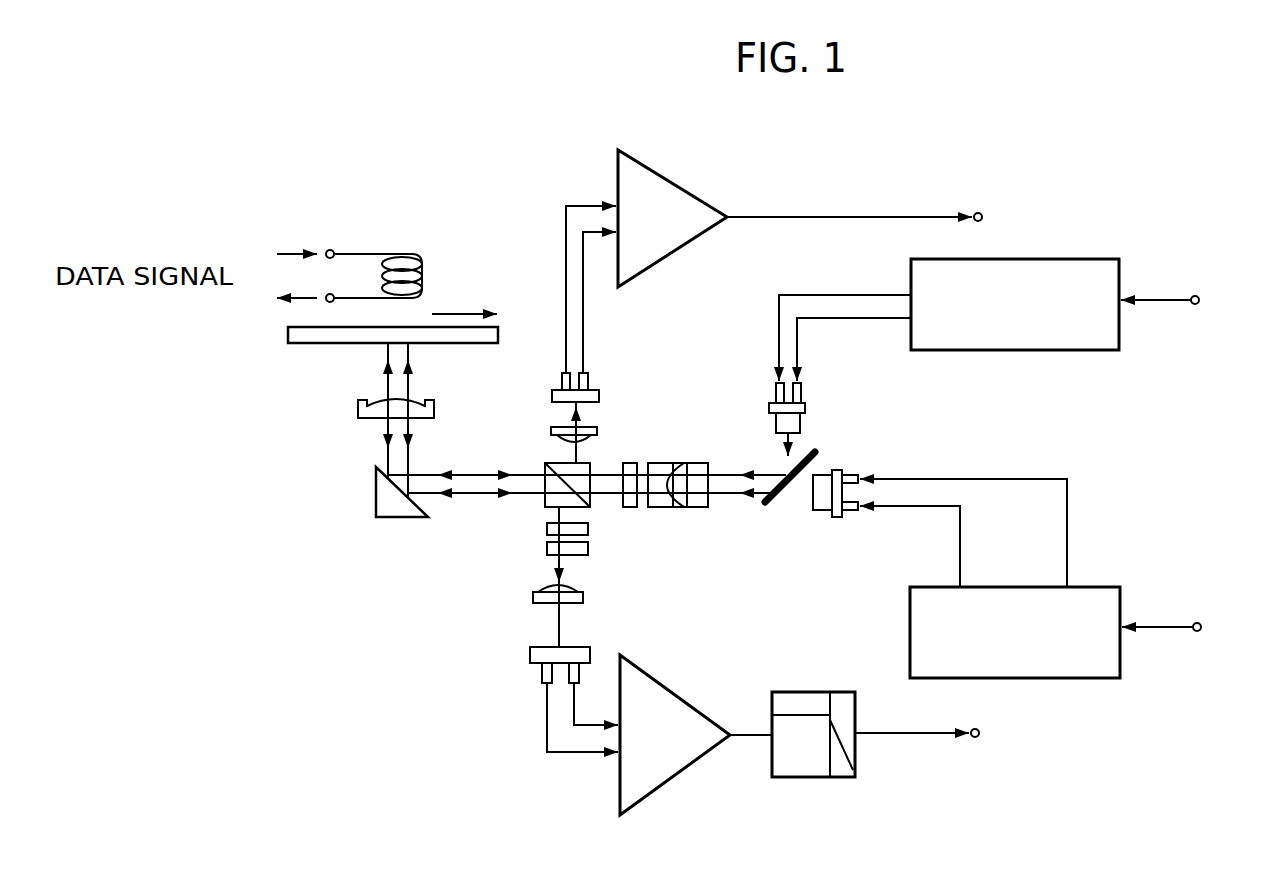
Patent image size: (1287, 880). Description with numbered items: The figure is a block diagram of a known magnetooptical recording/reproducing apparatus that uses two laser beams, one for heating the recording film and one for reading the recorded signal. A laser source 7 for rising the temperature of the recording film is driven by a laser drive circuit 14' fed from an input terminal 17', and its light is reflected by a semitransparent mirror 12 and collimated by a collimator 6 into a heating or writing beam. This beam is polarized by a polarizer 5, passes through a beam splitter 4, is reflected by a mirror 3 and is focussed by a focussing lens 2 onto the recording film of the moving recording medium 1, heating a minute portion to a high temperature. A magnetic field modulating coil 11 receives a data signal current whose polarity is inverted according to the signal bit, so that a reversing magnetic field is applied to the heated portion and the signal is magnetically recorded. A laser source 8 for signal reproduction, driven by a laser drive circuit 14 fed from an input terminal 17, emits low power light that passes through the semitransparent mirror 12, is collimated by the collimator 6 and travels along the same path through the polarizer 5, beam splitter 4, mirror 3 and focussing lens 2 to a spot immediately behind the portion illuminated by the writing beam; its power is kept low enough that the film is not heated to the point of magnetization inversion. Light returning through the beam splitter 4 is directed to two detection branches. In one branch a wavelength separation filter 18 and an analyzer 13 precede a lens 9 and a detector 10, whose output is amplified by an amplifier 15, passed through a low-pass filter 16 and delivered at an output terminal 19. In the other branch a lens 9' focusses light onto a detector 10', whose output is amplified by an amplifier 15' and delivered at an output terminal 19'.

The recording medium 1 is at (318, 333).
The focussing lens 2 is at (430, 398).
The mirror 3 is at (376, 497).
The beam splitter 4 is at (545, 467).
The polarizer 5 is at (631, 463).
The collimator 6 is at (676, 463).
The laser source for rising temperature of a recording film 7 is at (806, 418).
The laser source for signal reproduction 8 is at (835, 470).
The lens 9 is at (592, 601).
The lens 9' is at (595, 393).
The detector 10 is at (599, 650).
The detector 10' is at (552, 368).
The magnetic field modulating coil 11 is at (423, 256).
The semitransparent mirror 12 is at (765, 502).
The analyzer 13 is at (588, 548).
The laser drive circuit 14 is at (1030, 594).
The laser drive circuit 14' is at (1015, 268).
The amplifier 15 is at (685, 731).
The amplifier 15' is at (688, 214).
The low-pass filter 16 is at (800, 777).
The input terminal 17 is at (1183, 589).
The input terminal 17' is at (1184, 265).
The wavelength separation filter 18 is at (588, 530).
The output terminal 19 is at (1008, 731).
The output terminal 19' is at (999, 181).